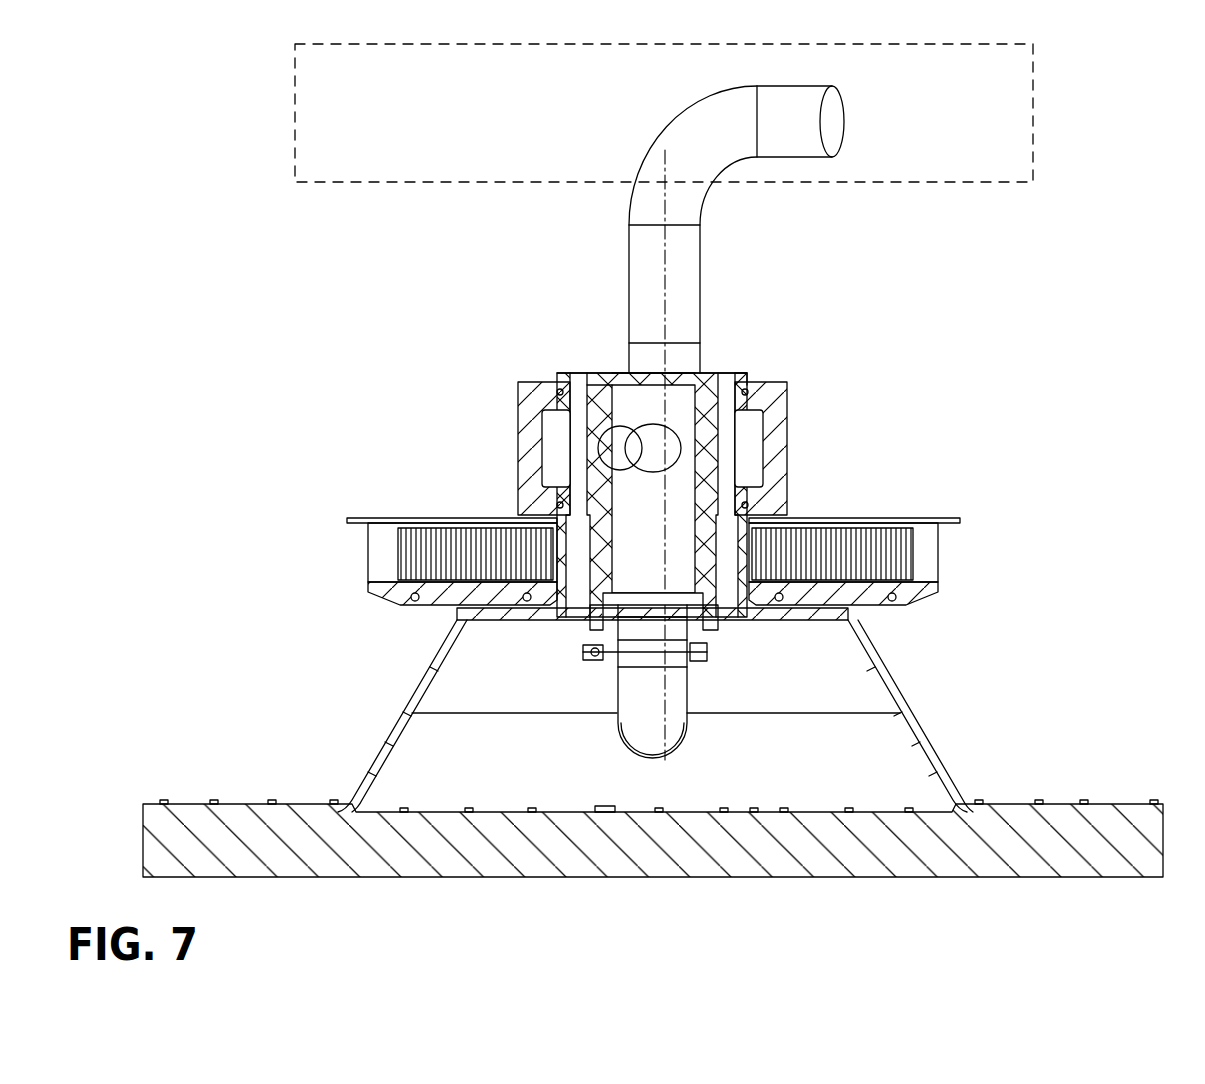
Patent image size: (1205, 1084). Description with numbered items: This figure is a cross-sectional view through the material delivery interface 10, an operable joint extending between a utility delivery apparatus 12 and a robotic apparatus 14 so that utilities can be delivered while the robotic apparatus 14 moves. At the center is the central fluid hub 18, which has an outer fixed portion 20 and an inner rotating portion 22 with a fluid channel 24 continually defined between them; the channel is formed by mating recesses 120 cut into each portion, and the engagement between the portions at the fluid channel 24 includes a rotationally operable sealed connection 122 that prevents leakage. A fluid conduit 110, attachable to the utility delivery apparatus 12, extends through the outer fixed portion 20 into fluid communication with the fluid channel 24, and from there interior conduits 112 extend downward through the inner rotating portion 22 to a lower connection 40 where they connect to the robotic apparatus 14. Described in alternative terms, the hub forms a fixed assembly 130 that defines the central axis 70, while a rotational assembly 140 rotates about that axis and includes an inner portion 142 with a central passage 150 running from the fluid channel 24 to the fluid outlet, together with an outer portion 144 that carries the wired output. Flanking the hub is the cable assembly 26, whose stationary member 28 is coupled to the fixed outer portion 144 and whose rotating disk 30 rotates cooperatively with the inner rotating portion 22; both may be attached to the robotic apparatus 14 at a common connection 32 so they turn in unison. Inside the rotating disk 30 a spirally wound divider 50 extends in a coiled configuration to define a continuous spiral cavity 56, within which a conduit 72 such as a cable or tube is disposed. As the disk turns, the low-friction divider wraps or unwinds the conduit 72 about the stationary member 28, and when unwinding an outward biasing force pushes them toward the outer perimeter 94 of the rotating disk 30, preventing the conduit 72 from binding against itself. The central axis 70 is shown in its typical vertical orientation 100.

The material delivery interface 10 is at (447, 378).
The utility delivery apparatus 12 is at (1038, 128).
The robotic apparatus 14 is at (503, 888).
The central fluid hub 18 is at (620, 355).
The outer fixed portion 20 is at (772, 402).
The inner rotating portion 22 is at (682, 403).
The fluid channel 24 is at (752, 446).
The cable assembly 26 is at (889, 525).
The stationary member 28 is at (852, 615).
The rotating disk 30 is at (922, 543).
The common connection 32 is at (573, 636).
The lower connection 40 is at (705, 623).
The spirally wound divider 50 is at (407, 548).
The continuous spiral cavity 56 is at (460, 512).
The central axis 70 is at (760, 229).
The conduit 72 is at (430, 600).
The outer perimeter 94 is at (922, 556).
The vertical orientation 100 is at (1068, 768).
The fluid conduit 110 is at (832, 130).
The interior conduit 112 is at (640, 448).
The recess 120 is at (553, 445).
The sealed connection 122 is at (755, 505).
The fixed assembly 130 is at (680, 368).
The rotational assembly 140 is at (398, 544).
The inner portion 142 is at (595, 340).
The outer portion 144 is at (505, 382).
The central passage 150 is at (747, 376).